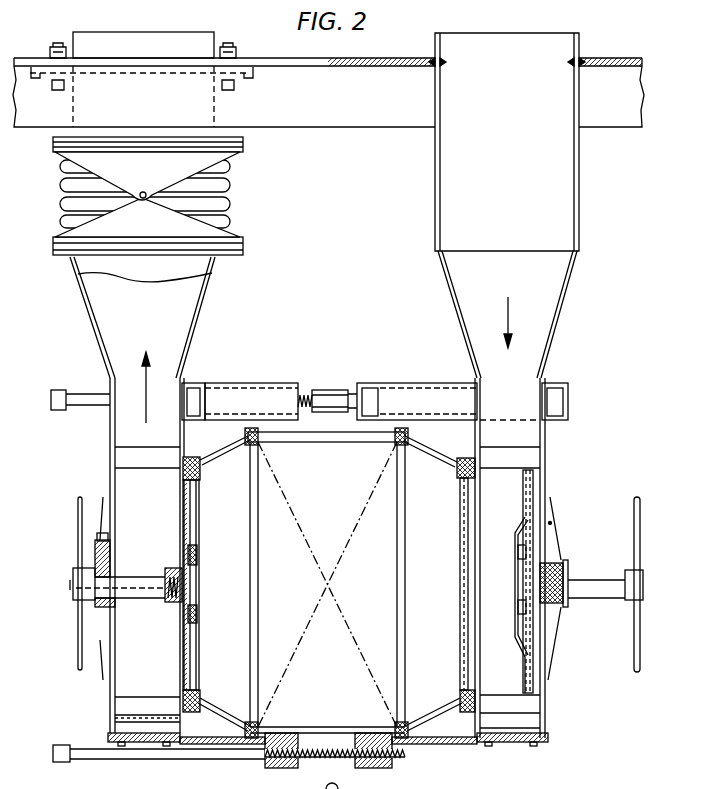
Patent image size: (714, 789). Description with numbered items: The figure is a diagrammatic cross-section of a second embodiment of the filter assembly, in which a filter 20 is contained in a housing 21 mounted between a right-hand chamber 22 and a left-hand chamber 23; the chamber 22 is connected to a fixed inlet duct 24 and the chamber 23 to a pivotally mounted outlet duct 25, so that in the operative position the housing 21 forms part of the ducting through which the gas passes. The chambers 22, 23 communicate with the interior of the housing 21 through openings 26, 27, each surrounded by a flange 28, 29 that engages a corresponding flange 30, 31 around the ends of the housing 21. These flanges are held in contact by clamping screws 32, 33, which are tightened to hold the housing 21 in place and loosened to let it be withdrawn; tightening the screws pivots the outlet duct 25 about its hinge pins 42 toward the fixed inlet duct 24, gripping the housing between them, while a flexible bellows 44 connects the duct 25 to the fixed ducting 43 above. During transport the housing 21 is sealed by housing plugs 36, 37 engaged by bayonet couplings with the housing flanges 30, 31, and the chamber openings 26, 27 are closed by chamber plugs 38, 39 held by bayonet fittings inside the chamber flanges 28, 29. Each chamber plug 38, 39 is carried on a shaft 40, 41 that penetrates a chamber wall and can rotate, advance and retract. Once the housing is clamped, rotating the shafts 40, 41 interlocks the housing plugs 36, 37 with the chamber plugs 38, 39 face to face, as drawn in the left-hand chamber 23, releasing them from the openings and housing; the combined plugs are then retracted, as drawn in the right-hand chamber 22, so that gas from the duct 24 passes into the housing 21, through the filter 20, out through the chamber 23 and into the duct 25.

The filter 20 is at (334, 668).
The housing 21 is at (447, 706).
The chamber 22 is at (500, 480).
The chamber 23 is at (134, 678).
The fixed inlet duct 24 is at (581, 226).
The pivotally mounted outlet duct 25 is at (96, 328).
The opening 26 is at (470, 658).
The opening 27 is at (179, 656).
The flange 28 is at (470, 457).
The flange 29 is at (193, 456).
The flange 30 is at (454, 468).
The flange 31 is at (208, 454).
The clamping screw 32 is at (92, 402).
The clamping screw 33 is at (85, 752).
The housing plug 36 is at (518, 568).
The housing plug 37 is at (198, 568).
The chamber plug 38 is at (533, 492).
The chamber plug 39 is at (186, 500).
The shaft 40 is at (599, 582).
The shaft 41 is at (130, 592).
The hinge pin 42 is at (147, 191).
The ducting 43 is at (149, 115).
The flexible bellows 44 is at (62, 186).